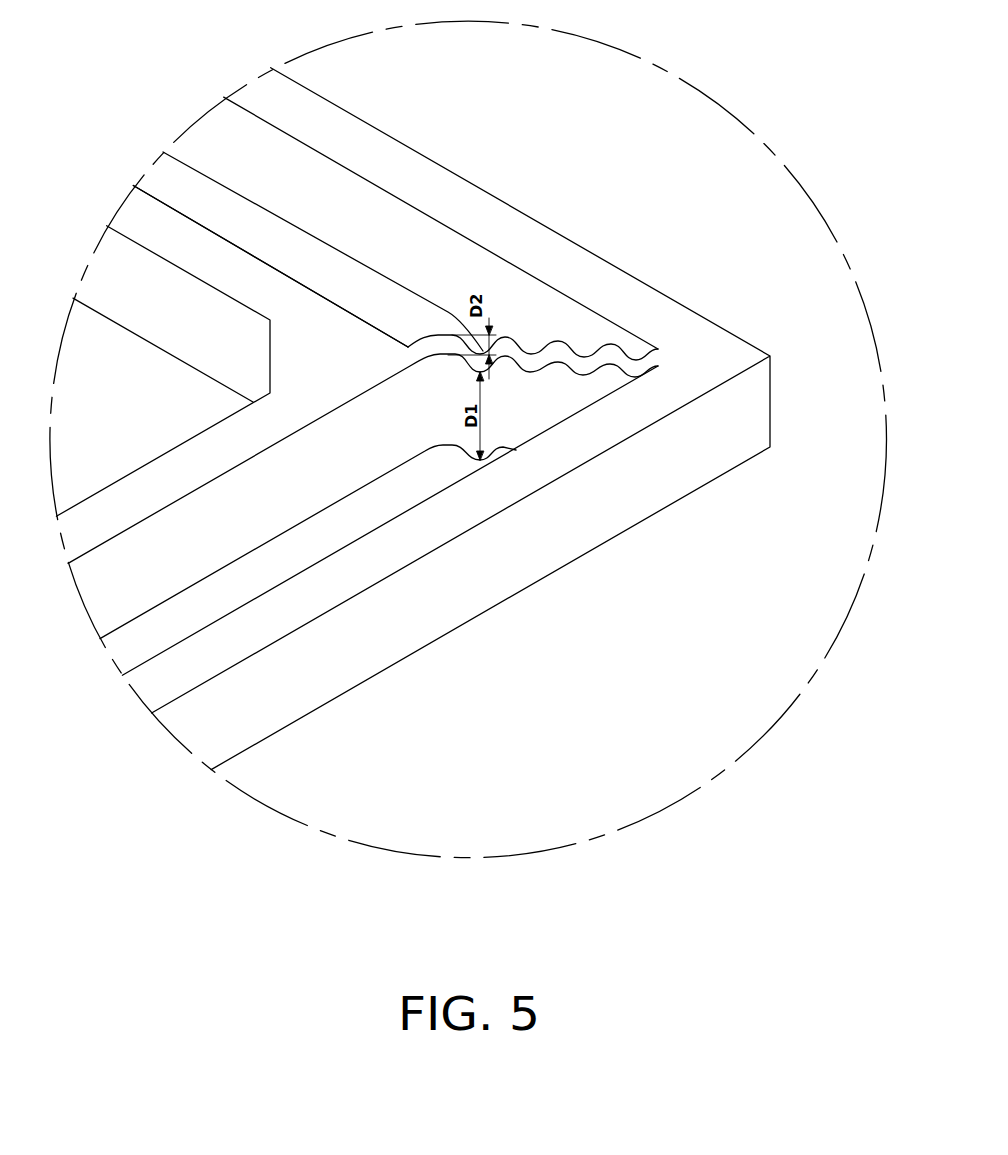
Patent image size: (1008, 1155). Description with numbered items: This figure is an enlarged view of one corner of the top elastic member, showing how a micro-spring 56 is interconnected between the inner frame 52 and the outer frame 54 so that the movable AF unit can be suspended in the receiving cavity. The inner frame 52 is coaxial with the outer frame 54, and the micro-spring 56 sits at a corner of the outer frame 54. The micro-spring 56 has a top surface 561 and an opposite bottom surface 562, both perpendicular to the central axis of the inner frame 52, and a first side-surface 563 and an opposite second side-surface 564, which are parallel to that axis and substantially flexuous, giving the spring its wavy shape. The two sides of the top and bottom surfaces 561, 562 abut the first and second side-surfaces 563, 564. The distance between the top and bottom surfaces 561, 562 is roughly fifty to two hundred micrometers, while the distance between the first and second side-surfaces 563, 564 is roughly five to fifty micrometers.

The inner frame 52 is at (153, 230).
The outer frame 54 is at (335, 130).
The micro-spring 56 is at (459, 510).
The top surface 561 is at (425, 349).
The bottom surface 562 is at (444, 446).
The first side-surface 563 is at (438, 333).
The second side-surface 564 is at (443, 390).